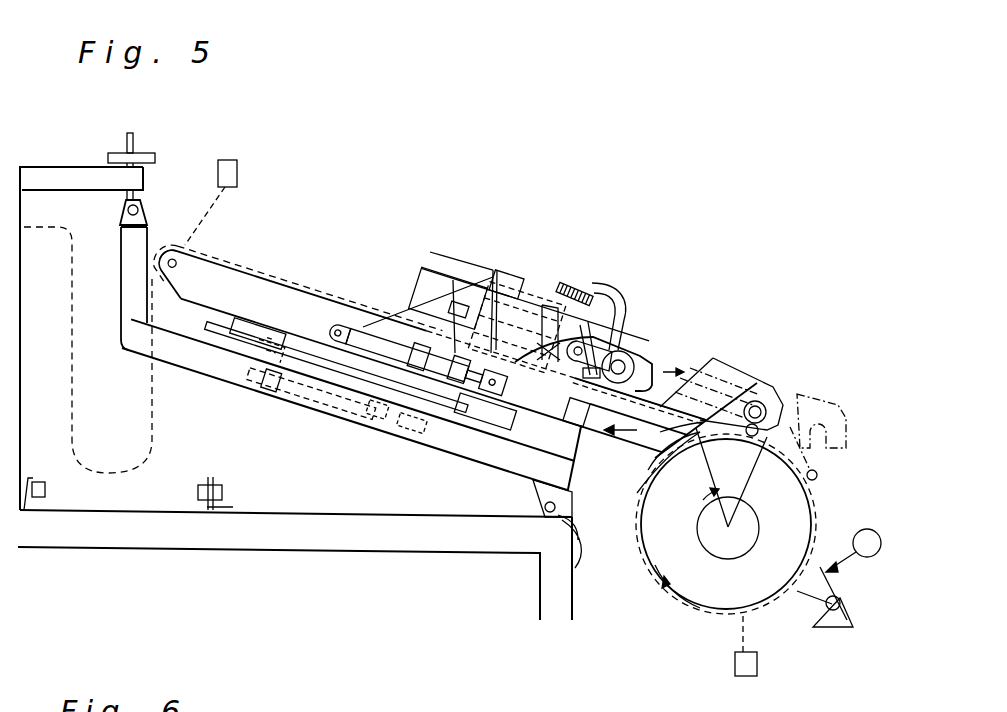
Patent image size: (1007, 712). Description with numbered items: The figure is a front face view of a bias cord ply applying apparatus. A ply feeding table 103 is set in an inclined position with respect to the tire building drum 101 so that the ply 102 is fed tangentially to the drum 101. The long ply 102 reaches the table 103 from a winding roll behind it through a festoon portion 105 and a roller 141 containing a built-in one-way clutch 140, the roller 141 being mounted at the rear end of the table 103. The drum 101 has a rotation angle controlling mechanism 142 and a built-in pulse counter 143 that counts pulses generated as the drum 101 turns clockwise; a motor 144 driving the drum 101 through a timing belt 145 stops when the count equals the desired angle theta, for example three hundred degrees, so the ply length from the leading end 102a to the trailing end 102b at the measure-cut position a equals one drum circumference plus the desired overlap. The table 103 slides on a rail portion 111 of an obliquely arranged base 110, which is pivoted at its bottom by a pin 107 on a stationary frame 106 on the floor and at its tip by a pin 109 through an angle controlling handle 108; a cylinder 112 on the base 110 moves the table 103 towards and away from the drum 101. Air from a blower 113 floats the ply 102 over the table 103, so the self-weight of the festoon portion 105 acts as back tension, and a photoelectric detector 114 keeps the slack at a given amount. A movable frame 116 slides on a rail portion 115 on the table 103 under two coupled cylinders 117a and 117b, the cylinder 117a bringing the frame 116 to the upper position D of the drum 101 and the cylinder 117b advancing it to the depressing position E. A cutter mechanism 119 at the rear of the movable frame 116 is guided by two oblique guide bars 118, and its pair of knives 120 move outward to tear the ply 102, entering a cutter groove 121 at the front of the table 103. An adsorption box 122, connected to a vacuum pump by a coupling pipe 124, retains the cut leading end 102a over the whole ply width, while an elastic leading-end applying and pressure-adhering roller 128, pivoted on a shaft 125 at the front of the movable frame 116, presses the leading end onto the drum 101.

The tire building drum 101 is at (773, 580).
The ply 102 is at (225, 245).
The leading end 102a is at (634, 476).
The trailing end 102b is at (600, 437).
The ply feeding table 103 is at (303, 313).
The festoon portion 105 is at (100, 472).
The stationary frame 106 is at (350, 530).
The pin 107 is at (540, 523).
The angle controlling handle 108 is at (131, 165).
The pin 109 is at (126, 208).
The base 110 is at (220, 362).
The rail portion 111 is at (432, 432).
The cylinder 112 is at (315, 400).
The blower 113 is at (263, 282).
The photoelectric detector 114 is at (223, 490).
The rail portion 115 is at (572, 545).
The movable frame 116 is at (542, 305).
The cylinder 117a is at (380, 320).
The cylinder 117b is at (447, 352).
The guide bars 118 is at (447, 277).
The cutter mechanism 119 is at (518, 275).
The knives 120 is at (485, 430).
The cutter groove 121 is at (713, 358).
The adsorption box 122 is at (640, 342).
The coupling pipe 124 is at (593, 275).
The shaft 125 is at (615, 325).
The leading-end applying and pressure-adhering roller 128 is at (670, 392).
The one-way clutch 140 is at (230, 160).
The roller 141 is at (160, 248).
The drum rotation angle controlling mechanism 142 is at (867, 528).
The pulse counter 143 is at (735, 662).
The motor 144 is at (847, 627).
The timing belt 145 is at (806, 605).
The upper position D is at (729, 395).
The depressing position E is at (800, 393).
The measure-cut position a is at (503, 276).